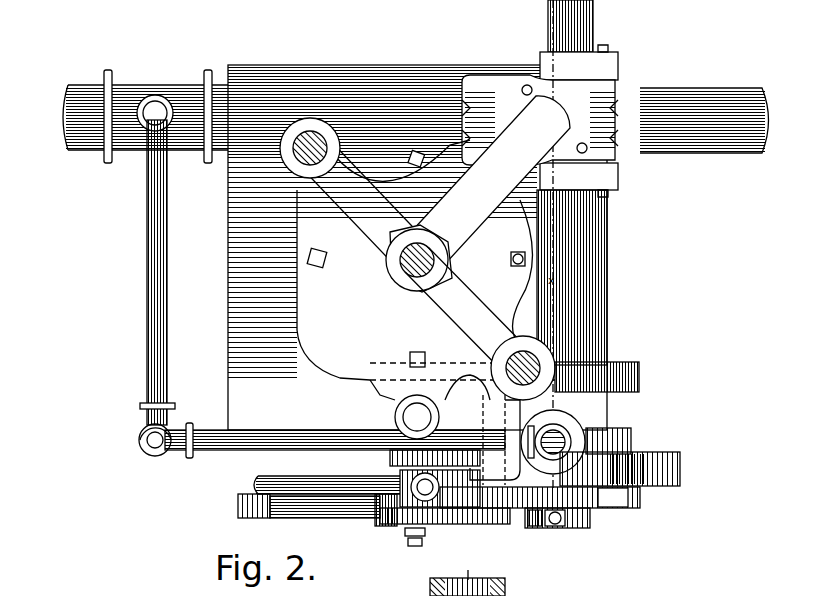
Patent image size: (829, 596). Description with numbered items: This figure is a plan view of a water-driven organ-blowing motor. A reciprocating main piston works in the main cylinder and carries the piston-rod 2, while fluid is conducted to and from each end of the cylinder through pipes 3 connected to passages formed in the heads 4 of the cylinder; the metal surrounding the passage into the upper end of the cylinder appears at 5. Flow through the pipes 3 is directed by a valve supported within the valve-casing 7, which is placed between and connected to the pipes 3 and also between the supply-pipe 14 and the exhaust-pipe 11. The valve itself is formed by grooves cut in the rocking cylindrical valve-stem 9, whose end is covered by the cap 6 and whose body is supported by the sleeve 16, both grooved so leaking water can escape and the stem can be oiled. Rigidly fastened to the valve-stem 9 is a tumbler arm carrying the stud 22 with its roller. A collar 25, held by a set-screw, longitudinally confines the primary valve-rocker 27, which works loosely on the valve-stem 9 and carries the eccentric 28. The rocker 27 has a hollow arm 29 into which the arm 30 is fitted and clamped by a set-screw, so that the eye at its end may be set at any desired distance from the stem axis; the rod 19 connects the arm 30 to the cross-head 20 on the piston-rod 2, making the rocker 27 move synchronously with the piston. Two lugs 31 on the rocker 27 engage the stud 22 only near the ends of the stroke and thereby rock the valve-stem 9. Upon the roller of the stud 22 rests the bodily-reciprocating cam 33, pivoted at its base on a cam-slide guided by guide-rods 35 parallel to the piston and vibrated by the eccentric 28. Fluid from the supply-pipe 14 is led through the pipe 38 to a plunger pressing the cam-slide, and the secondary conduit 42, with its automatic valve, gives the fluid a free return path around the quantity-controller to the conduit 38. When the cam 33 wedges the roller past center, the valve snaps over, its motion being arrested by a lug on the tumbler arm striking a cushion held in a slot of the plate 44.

The piston-rod 2 is at (401, 260).
The pipes 3 is at (506, 588).
The heads of the cylinder 4 is at (417, 249).
The metal surrounding the passage 5 is at (485, 186).
The cap 6 is at (588, 16).
The valve-casing 7 is at (640, 155).
The valve-stem 9 is at (536, 527).
The exhaust-pipe 11 is at (760, 152).
The supply-pipe 14 is at (62, 150).
The sleeve 16 is at (523, 353).
The rod 19 is at (312, 474).
The cross-head 20 is at (470, 314).
The stud 22 is at (490, 518).
The collar 25 is at (582, 524).
The primary valve-rocker 27 is at (592, 512).
The eccentric 28 is at (612, 438).
The hollow arm 29 is at (386, 530).
The arm 30 is at (312, 520).
The lugs 31 is at (520, 489).
The cam 33 is at (680, 470).
The guide-rods 35 is at (430, 407).
The pipe 38 is at (171, 273).
The secondary conduit 42 is at (214, 428).
The plate 44 is at (640, 382).